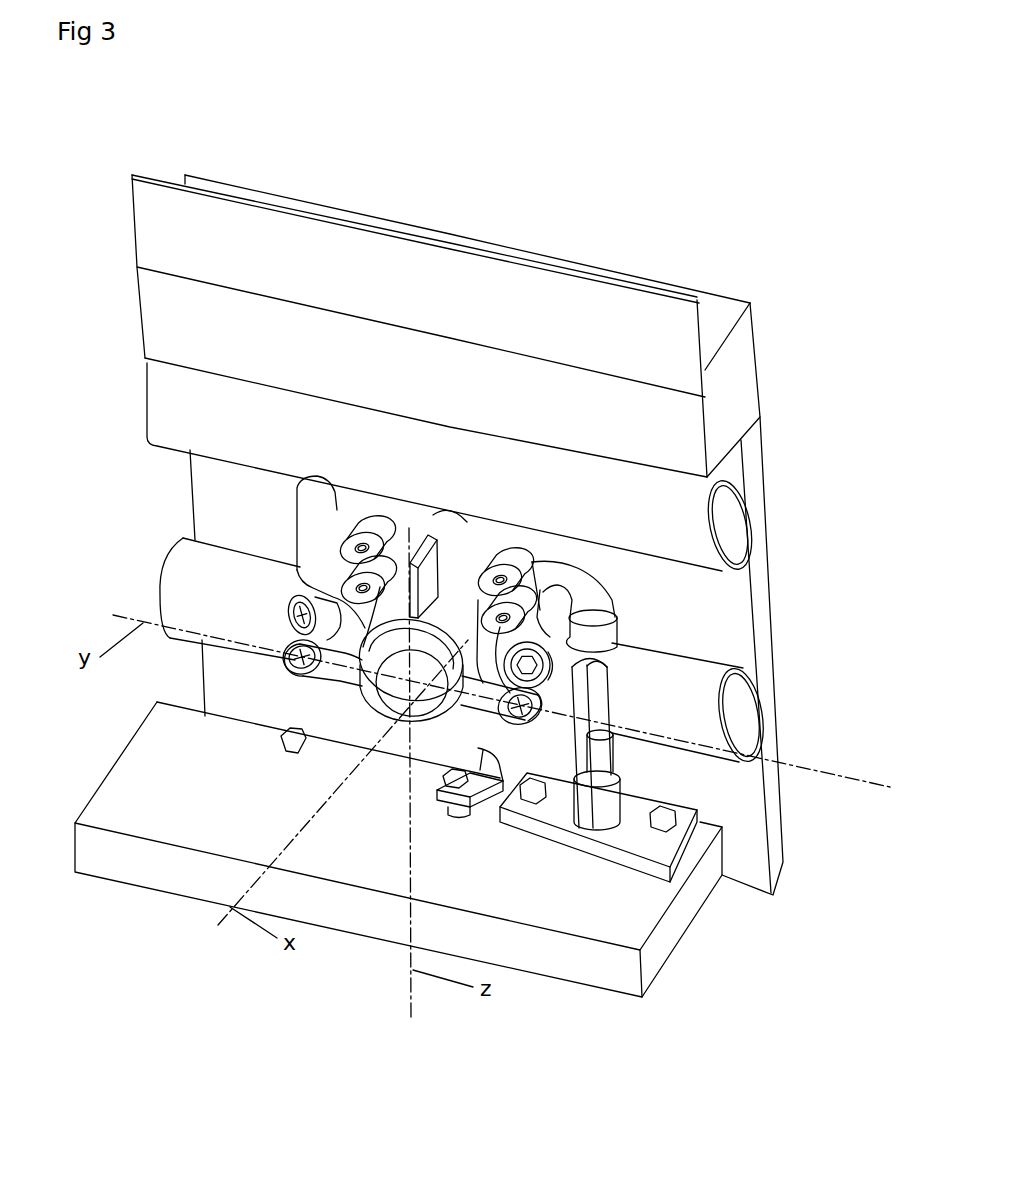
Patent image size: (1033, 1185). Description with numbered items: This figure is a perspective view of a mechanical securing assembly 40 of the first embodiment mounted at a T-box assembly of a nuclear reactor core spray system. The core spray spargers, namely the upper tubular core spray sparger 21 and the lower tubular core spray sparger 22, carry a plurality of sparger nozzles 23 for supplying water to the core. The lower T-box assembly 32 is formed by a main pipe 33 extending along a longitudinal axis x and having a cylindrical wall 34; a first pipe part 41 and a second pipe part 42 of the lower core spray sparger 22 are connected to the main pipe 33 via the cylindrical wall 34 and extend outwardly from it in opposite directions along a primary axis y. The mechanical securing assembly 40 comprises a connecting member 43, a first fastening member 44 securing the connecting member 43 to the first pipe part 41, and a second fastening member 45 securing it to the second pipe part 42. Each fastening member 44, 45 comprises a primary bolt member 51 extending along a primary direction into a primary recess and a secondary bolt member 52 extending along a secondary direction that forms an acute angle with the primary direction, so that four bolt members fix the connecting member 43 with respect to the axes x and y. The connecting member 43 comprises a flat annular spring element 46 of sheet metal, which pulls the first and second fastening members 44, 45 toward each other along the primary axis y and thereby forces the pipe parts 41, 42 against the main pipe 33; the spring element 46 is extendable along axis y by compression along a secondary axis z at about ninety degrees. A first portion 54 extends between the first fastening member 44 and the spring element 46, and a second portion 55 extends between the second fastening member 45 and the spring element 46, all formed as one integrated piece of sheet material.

The upper tubular core spray sparger 21 is at (243, 412).
The lower tubular core spray sparger 22 is at (160, 583).
The sparger nozzles 23 is at (362, 522).
The lower T-box assembly 32 is at (453, 587).
The main pipe 33 is at (445, 573).
The cylindrical wall 34 is at (467, 580).
The mechanical securing assembly 40 is at (433, 757).
The first pipe part 41 is at (177, 594).
The second pipe part 42 is at (700, 713).
The connecting member 43 is at (455, 714).
The first fastening member 44 is at (290, 674).
The second fastening member 45 is at (554, 682).
The spring element 46 is at (403, 715).
The primary bolt member 51 is at (285, 659).
The secondary bolt member 52 is at (297, 612).
The first portion 54 is at (337, 670).
The second portion 55 is at (482, 706).